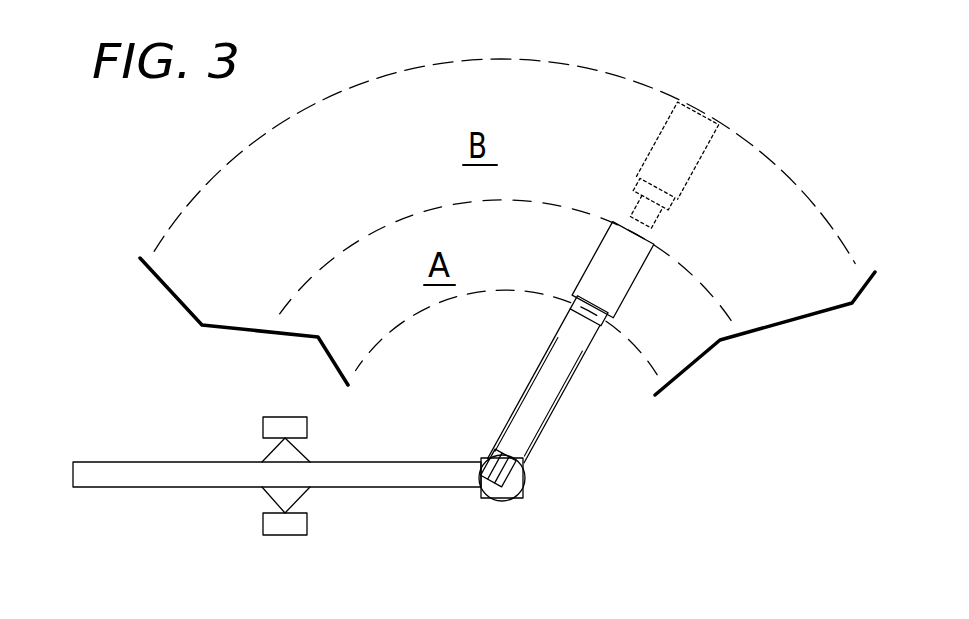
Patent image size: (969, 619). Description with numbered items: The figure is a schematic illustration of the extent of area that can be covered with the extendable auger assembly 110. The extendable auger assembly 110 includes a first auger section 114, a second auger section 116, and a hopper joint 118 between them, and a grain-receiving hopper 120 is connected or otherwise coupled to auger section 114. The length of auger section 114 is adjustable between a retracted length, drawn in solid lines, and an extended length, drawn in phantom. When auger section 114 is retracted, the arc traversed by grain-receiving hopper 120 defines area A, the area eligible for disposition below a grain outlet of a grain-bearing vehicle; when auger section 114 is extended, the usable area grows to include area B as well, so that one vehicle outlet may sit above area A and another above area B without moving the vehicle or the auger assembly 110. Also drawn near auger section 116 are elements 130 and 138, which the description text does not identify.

The extendable auger assembly 110 is at (88, 438).
The auger section 114 is at (568, 388).
The auger section 116 is at (175, 478).
The hopper joint 118 is at (507, 505).
The grain-receiving hopper 120 is at (623, 278).
The mounting bracket 130 is at (295, 493).
The sensor / clamp block 138 is at (281, 426).